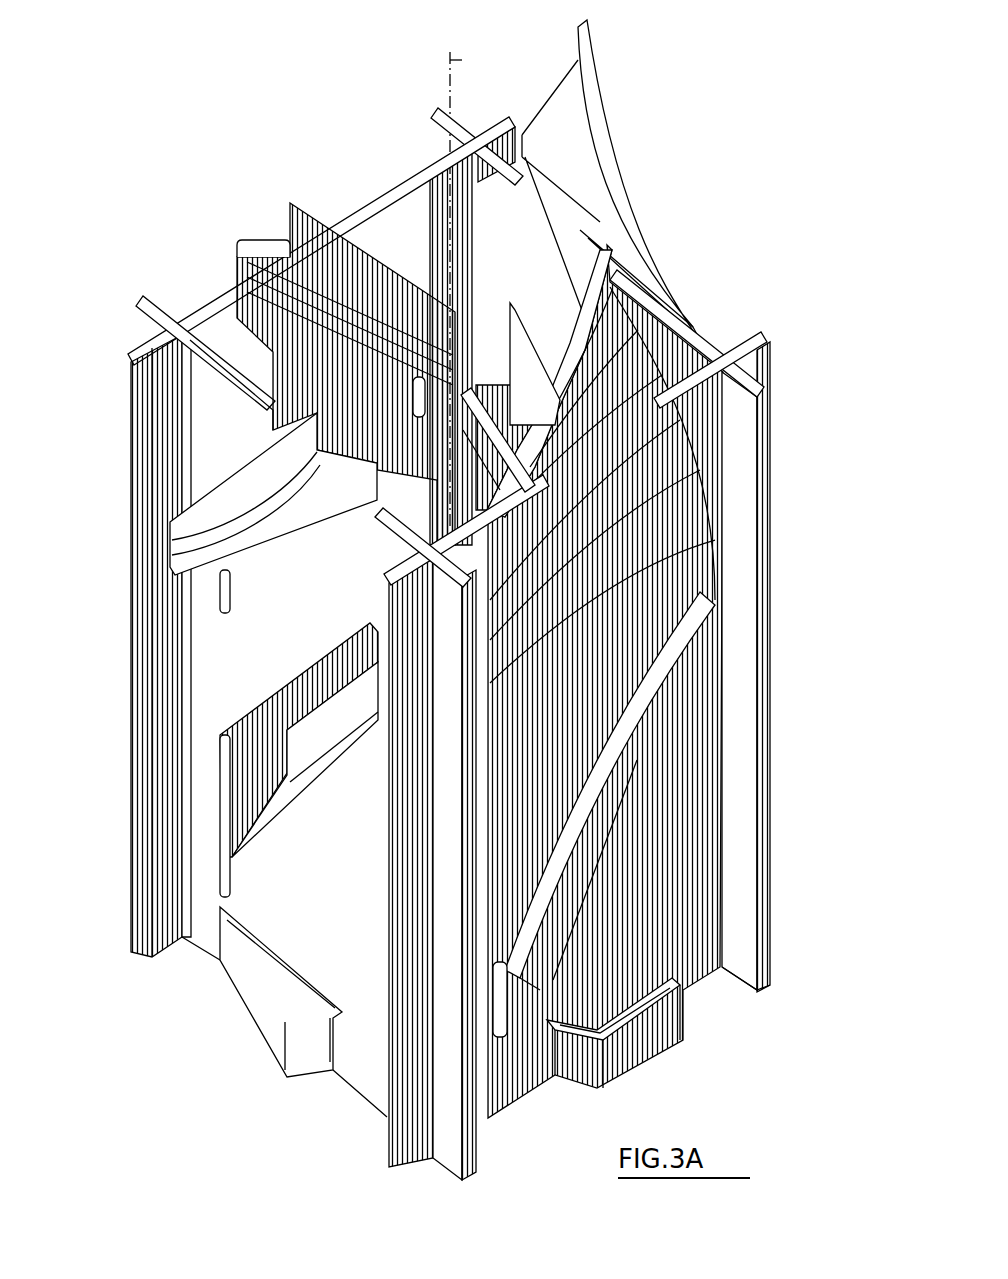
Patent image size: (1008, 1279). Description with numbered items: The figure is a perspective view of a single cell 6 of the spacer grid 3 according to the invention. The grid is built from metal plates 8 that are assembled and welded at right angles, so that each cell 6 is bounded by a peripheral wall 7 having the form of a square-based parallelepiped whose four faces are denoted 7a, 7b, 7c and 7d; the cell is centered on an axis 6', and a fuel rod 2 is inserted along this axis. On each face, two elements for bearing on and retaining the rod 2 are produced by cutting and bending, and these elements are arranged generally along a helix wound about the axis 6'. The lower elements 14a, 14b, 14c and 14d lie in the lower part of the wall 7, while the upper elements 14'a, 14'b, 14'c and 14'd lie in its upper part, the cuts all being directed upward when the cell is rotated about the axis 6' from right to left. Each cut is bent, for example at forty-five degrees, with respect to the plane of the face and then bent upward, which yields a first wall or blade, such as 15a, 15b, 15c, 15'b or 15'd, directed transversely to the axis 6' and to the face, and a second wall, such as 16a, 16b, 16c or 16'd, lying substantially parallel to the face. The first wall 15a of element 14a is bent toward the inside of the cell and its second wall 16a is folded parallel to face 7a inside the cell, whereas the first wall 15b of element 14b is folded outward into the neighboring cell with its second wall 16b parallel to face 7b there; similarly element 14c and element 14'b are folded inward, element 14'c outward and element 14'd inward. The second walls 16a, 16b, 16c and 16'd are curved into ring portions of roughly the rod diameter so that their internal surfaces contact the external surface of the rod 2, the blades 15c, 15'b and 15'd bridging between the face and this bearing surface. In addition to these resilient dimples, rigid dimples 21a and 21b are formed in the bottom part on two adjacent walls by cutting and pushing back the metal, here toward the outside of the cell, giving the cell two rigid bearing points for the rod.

The rod 2 is at (246, 511).
The spacer grid 3 is at (808, 636).
The cell 6 is at (447, 326).
The axis of the cell 6' is at (479, 287).
The peripheral wall 7 is at (665, 318).
The face of the peripheral wall 7a is at (208, 942).
The face of the peripheral wall 7b is at (713, 973).
The face of the peripheral wall 7c is at (625, 282).
The face of the peripheral wall 7d is at (212, 305).
The metal plate 8 is at (748, 340).
The bearing and retaining element 14a is at (317, 707).
The bearing and retaining element 14b is at (613, 777).
The bearing and retaining element 14c is at (473, 413).
The bearing and retaining element 14d is at (433, 515).
The bearing and retaining element 14'a is at (220, 476).
The bearing and retaining element 14'b is at (601, 425).
The bearing and retaining element 14'c is at (614, 186).
The bearing and retaining element 14'd is at (346, 352).
The first wall 15a is at (297, 793).
The first wall 15b is at (530, 980).
The first wall 15c is at (548, 380).
The first wall 15'b is at (602, 486).
The first wall 15'd is at (342, 323).
The second wall 16a is at (295, 750).
The second wall 16b is at (593, 813).
The second wall 16c is at (483, 433).
The second wall 16'd is at (474, 341).
The rigid dimple 21a is at (253, 1030).
The rigid dimple 21b is at (633, 1057).